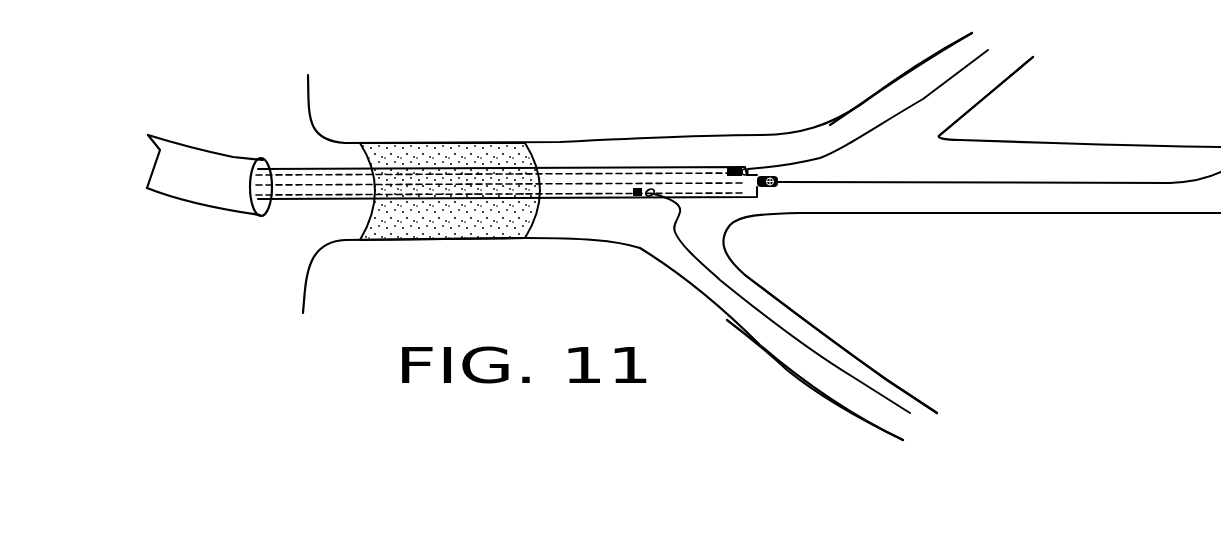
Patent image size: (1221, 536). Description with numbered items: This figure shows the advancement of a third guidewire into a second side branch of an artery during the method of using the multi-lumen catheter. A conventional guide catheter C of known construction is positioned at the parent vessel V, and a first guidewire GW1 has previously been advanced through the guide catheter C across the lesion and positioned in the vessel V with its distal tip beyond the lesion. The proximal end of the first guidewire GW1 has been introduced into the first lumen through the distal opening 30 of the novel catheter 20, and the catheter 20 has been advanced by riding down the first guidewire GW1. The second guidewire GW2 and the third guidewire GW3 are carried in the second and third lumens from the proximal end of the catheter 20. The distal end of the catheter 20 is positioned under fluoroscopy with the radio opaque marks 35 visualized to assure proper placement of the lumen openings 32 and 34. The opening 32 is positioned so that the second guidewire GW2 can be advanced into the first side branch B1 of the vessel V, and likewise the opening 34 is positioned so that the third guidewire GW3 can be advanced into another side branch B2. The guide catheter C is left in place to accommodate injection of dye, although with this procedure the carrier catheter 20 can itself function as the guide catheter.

The guide catheter C is at (229, 156).
The vessel V is at (727, 143).
The first side branch B1 is at (968, 88).
The side branch B2 is at (800, 353).
The catheter 20 is at (623, 167).
The distal opening 30 is at (780, 179).
The lumen opening 32 is at (748, 171).
The lumen opening 34 is at (672, 222).
The radio opaque marks 35 is at (633, 193).
The first guidewire GW1 is at (1047, 183).
The second guidewire GW2 is at (923, 99).
The third guidewire GW3 is at (815, 347).